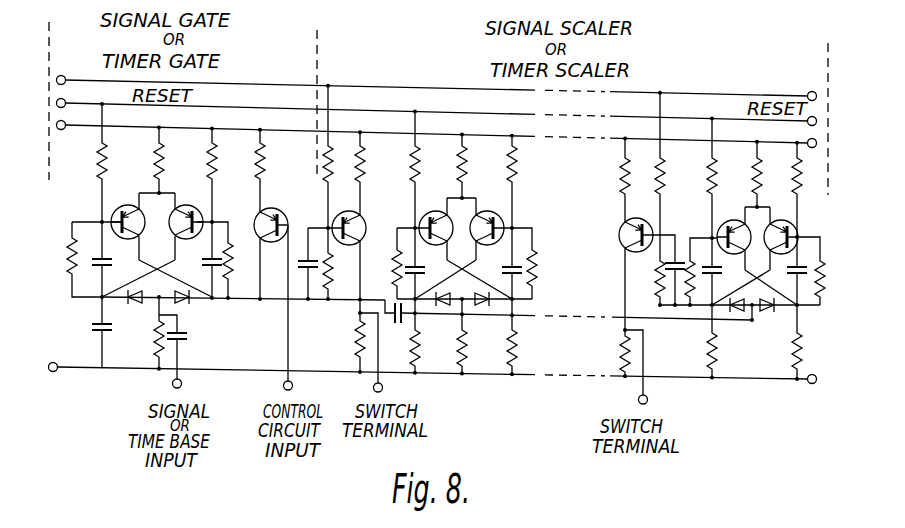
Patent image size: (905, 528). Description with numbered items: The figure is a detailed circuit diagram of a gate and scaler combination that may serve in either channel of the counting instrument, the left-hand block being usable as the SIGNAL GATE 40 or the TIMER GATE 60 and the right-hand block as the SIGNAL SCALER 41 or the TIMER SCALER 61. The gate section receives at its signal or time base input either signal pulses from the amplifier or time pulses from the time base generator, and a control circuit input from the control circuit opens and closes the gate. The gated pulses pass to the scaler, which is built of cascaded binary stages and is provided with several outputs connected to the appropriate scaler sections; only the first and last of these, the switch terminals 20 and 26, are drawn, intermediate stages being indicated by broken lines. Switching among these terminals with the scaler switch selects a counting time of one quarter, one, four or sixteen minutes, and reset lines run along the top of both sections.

The signal gate 40 is at (226, 199).
The timer gate 60 is at (226, 220).
The signal scaler 41 is at (561, 211).
The timer scaler 61 is at (561, 232).
The scaler output terminal 2^0 20 is at (387, 353).
The scaler output terminal 2^6 26 is at (652, 367).